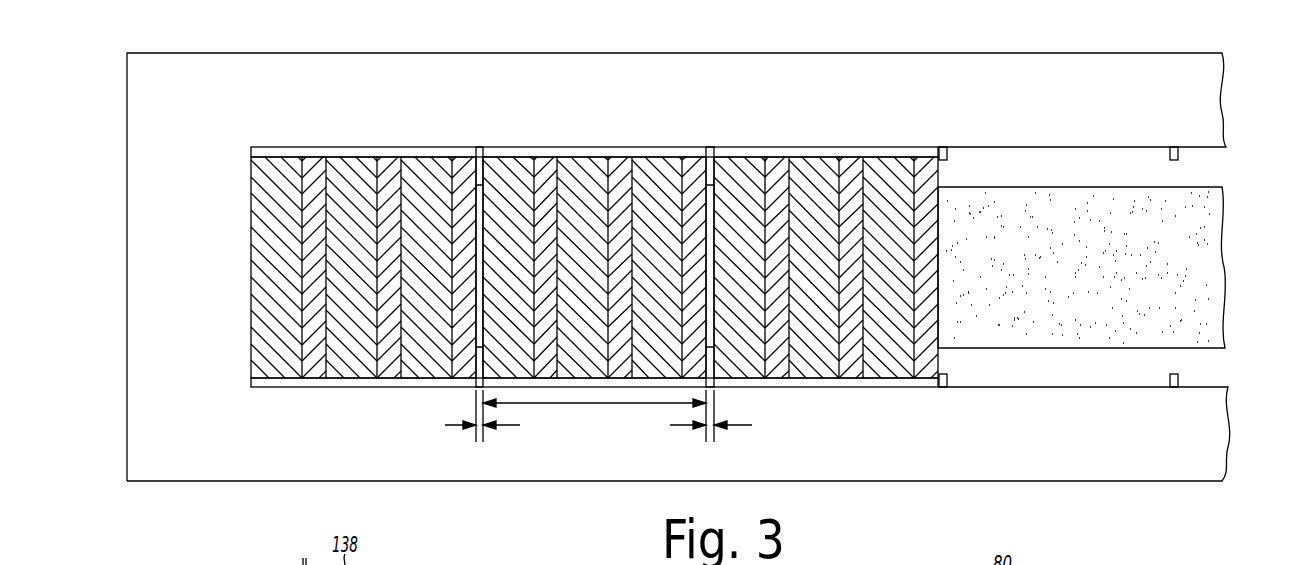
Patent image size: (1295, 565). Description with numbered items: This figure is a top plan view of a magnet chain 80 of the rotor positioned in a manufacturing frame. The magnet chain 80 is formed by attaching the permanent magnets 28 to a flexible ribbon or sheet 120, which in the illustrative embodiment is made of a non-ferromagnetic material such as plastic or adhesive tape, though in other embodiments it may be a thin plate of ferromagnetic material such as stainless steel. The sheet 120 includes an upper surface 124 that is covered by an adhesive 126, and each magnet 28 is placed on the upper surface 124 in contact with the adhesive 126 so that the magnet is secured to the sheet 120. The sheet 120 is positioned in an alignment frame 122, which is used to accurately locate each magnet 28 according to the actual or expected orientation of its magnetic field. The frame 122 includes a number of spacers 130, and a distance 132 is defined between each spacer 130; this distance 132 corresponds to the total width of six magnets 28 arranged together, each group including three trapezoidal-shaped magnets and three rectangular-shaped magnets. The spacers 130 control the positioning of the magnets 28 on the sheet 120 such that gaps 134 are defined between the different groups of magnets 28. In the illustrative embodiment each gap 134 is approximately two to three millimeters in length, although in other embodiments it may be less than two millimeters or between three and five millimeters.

The magnet chain 80 is at (850, 104).
The alignment frame 122 is at (1048, 68).
The sheet 120 is at (1011, 203).
The adhesive 126 is at (1205, 232).
The upper surface 124 is at (1205, 306).
The permanent magnets 28 is at (278, 379).
The spacers 130 is at (479, 147).
The distance 132 is at (584, 405).
The gaps 134 is at (507, 427).